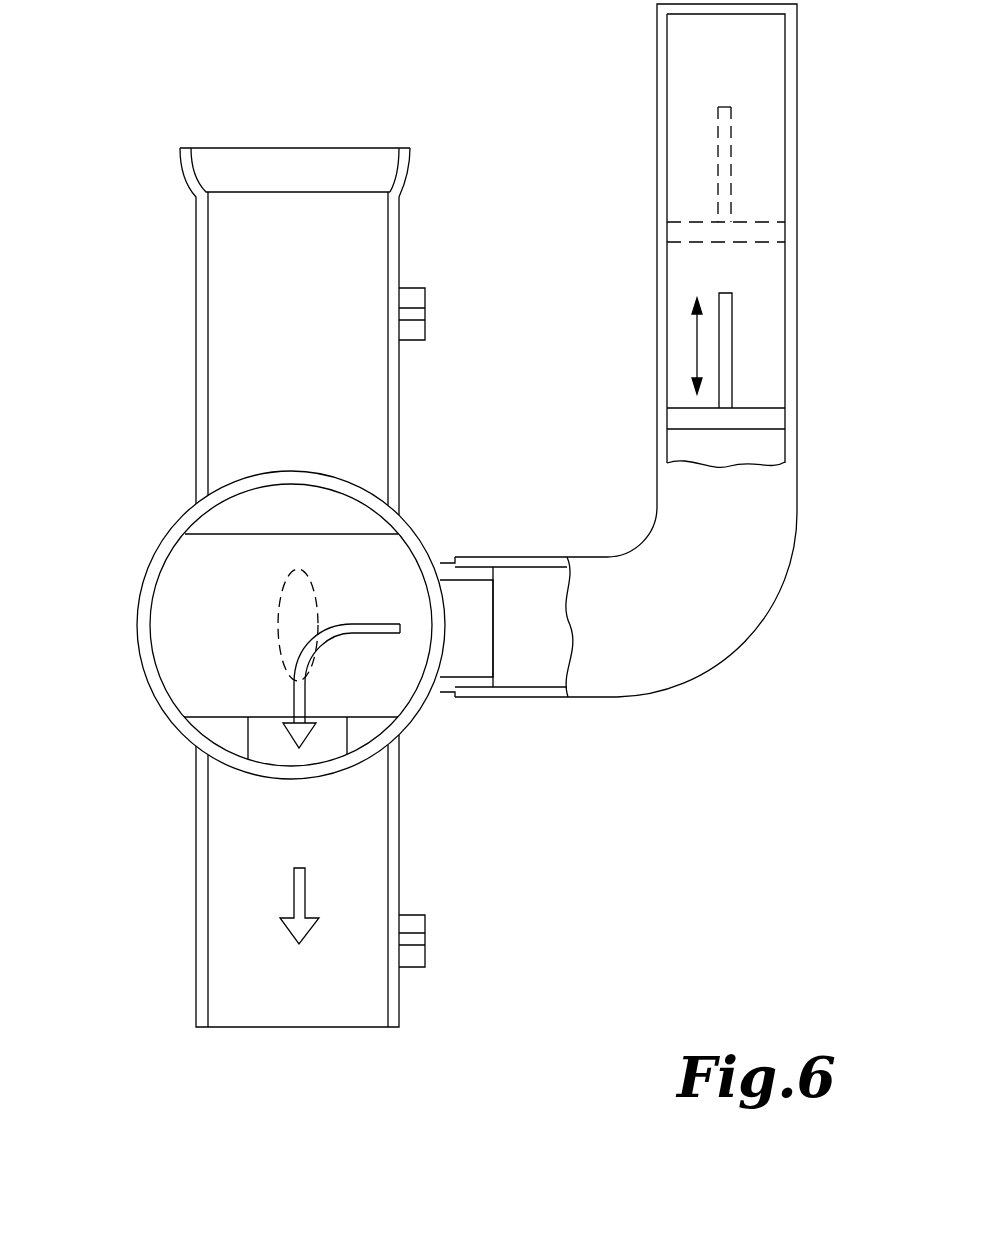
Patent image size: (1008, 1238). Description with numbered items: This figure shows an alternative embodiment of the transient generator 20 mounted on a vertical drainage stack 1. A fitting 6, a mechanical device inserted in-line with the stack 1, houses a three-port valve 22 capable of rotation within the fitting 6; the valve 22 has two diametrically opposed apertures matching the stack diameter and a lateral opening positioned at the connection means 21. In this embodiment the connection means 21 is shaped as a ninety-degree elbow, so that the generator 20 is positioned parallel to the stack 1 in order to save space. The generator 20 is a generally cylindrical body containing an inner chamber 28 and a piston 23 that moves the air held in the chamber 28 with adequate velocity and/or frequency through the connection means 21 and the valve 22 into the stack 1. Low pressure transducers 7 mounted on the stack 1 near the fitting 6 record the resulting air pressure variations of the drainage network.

The vertical stack 1 is at (105, 261).
The fitting 6 is at (148, 727).
The low pressure transducer 7 is at (438, 310).
The transient generator 20 is at (800, 162).
The connection means 21 is at (465, 644).
The three-port valve 22 is at (190, 577).
The piston 23 is at (765, 419).
The inner chamber 28 is at (765, 331).